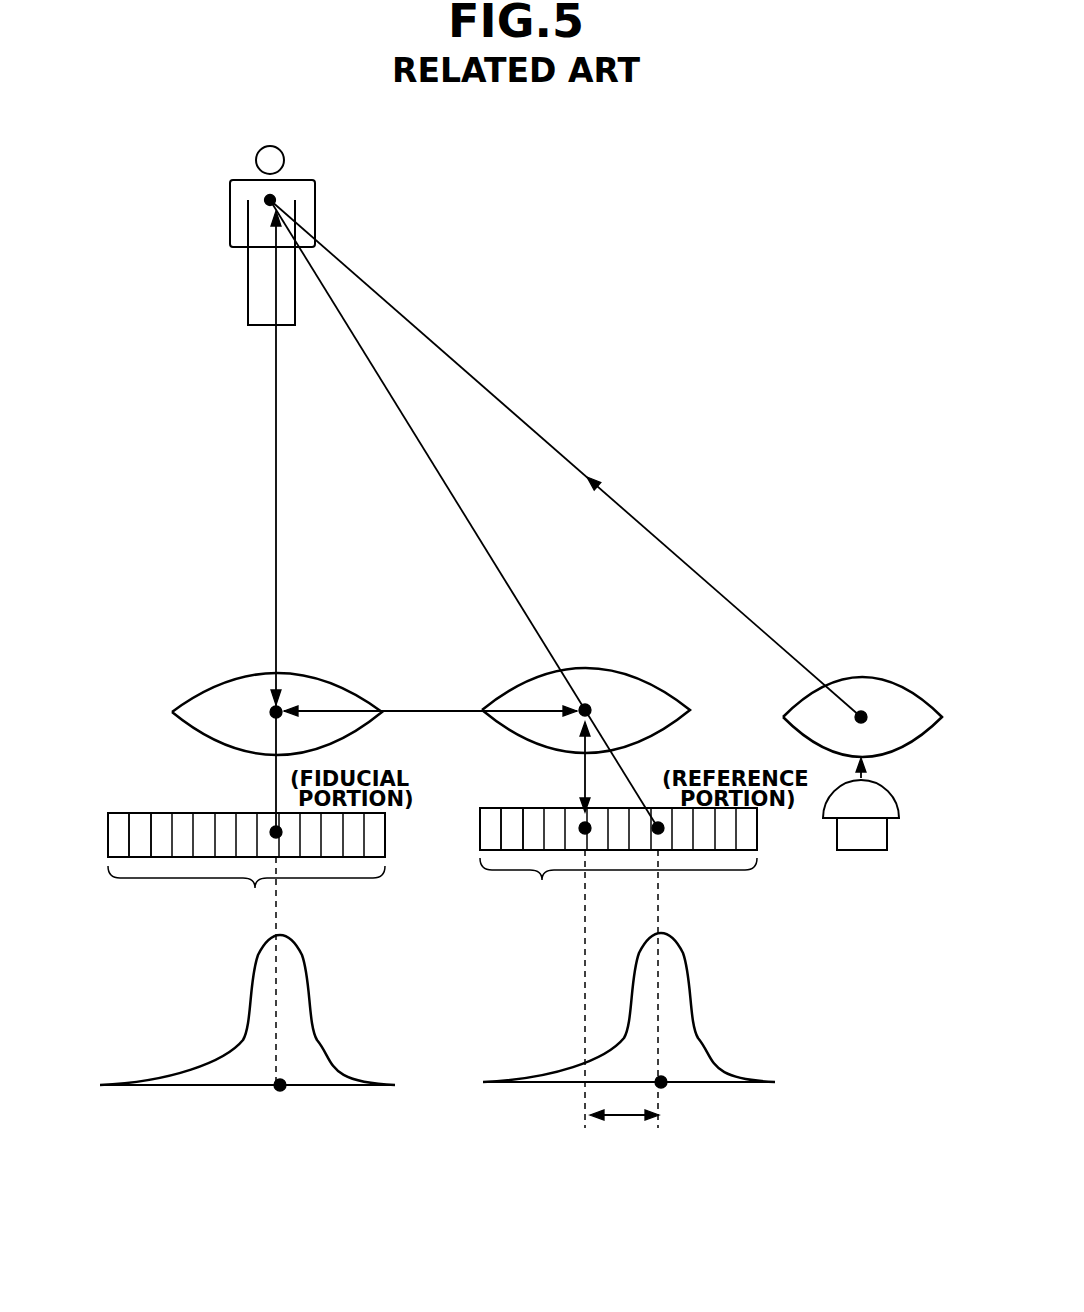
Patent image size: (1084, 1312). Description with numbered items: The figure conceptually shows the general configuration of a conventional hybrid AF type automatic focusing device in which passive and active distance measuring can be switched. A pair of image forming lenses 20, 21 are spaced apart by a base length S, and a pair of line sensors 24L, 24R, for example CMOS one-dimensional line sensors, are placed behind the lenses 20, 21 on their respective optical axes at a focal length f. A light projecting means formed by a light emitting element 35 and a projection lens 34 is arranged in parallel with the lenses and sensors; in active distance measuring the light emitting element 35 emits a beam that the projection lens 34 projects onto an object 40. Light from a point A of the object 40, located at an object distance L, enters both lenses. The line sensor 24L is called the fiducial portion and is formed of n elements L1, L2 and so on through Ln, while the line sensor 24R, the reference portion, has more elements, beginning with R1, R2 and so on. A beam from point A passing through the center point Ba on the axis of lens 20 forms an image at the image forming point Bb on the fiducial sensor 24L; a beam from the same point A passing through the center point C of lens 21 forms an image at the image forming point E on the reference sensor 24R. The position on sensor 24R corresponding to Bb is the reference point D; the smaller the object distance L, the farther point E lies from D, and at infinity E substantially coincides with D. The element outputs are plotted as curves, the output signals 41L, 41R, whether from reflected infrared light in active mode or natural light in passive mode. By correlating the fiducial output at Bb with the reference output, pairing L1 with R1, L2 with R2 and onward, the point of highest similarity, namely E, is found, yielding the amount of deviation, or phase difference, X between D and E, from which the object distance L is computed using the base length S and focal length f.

The object 40 is at (248, 290).
The point of the object A is at (280, 195).
The object distance L is at (275, 545).
The image forming lens 20 is at (312, 672).
The image forming lens 21 is at (668, 688).
The projection lens 34 is at (895, 680).
The light emitting element 35 is at (898, 808).
The center point of image forming lens Ba is at (268, 708).
The image forming point Bb is at (270, 826).
The center point of image forming lens C is at (592, 705).
The reference point D is at (590, 823).
The image forming point E is at (656, 822).
The base length S is at (396, 708).
The focal length f is at (582, 770).
The line sensor 24L is at (189, 797).
The line sensor 24R is at (468, 860).
The element L1 is at (118, 828).
The element L2 is at (142, 832).
The element Ln is at (383, 838).
The element R1 is at (495, 832).
The element R2 is at (510, 820).
The number of elements n is at (246, 887).
The output signal 41L is at (303, 985).
The output signal 41R is at (683, 983).
The amount of deviation X is at (630, 1118).